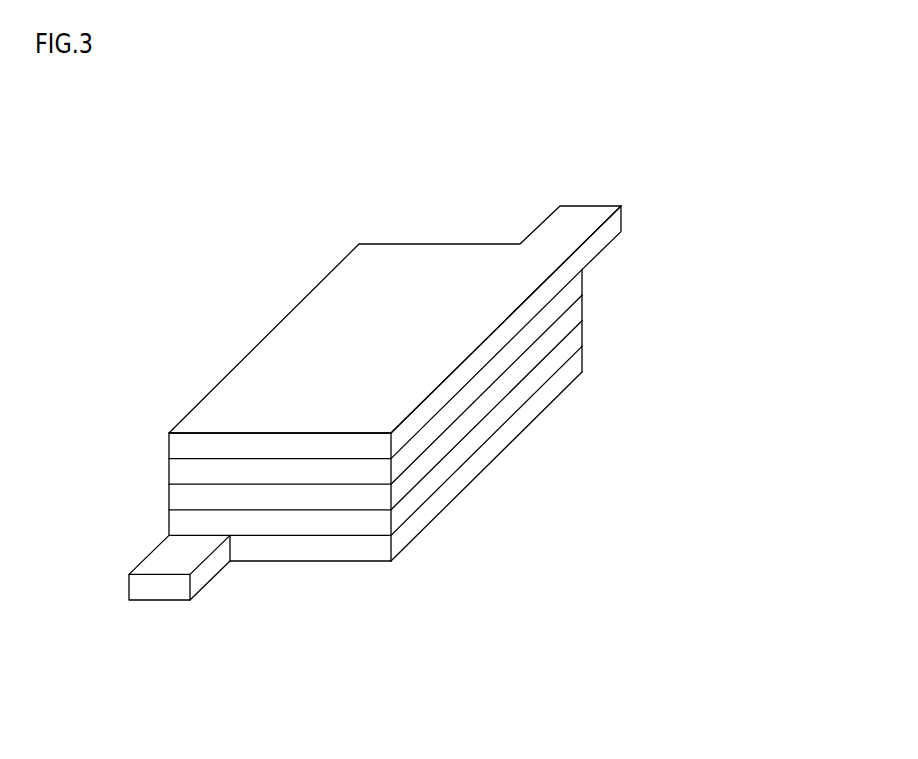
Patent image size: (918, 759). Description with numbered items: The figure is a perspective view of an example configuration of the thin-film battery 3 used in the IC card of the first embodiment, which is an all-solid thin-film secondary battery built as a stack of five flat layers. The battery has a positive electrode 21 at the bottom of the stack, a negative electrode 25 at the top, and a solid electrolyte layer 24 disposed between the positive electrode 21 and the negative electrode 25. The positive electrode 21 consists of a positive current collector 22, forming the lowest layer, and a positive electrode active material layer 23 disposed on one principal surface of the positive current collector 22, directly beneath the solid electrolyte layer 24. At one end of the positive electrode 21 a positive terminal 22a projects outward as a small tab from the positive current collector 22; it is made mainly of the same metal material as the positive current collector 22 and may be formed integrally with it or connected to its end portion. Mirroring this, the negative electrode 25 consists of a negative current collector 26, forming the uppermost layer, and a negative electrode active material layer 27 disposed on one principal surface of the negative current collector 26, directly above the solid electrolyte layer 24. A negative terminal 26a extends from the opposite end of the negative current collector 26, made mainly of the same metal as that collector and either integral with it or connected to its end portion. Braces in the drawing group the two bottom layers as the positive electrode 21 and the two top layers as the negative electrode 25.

The thin-film battery 3 is at (421, 214).
The positive electrode 21 is at (667, 328).
The positive current collector 22 is at (577, 362).
The positive terminal 22a is at (162, 587).
The positive electrode active material layer 23 is at (577, 336).
The solid electrolyte layer 24 is at (577, 311).
The negative electrode 25 is at (667, 253).
The negative current collector 26 is at (577, 261).
The negative terminal 26a is at (574, 226).
The negative electrode active material layer 27 is at (577, 286).